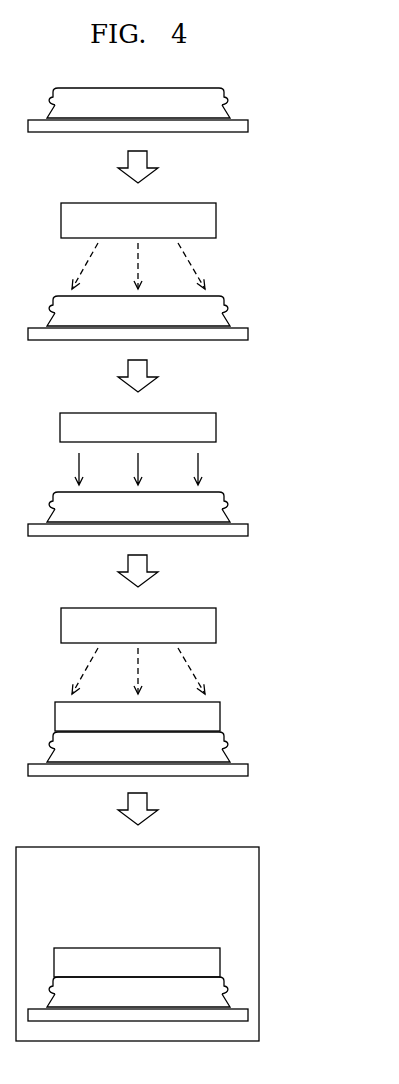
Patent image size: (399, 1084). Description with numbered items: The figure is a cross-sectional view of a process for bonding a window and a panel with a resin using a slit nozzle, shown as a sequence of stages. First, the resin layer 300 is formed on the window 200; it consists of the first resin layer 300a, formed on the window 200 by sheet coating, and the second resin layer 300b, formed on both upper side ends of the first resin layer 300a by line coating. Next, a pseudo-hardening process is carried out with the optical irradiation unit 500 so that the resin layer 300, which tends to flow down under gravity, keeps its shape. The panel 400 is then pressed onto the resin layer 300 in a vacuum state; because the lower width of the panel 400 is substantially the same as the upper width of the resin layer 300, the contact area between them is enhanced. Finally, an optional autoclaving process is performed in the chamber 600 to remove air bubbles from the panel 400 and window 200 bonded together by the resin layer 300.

The window 200 is at (248, 1015).
The resin layer 300 is at (206, 539).
The first resin layer 300a is at (228, 1001).
The second resin layer 300b is at (226, 982).
The panel 400 is at (216, 427).
The optical irradiation unit 500 is at (175, 448).
The chamber 600 is at (259, 872).